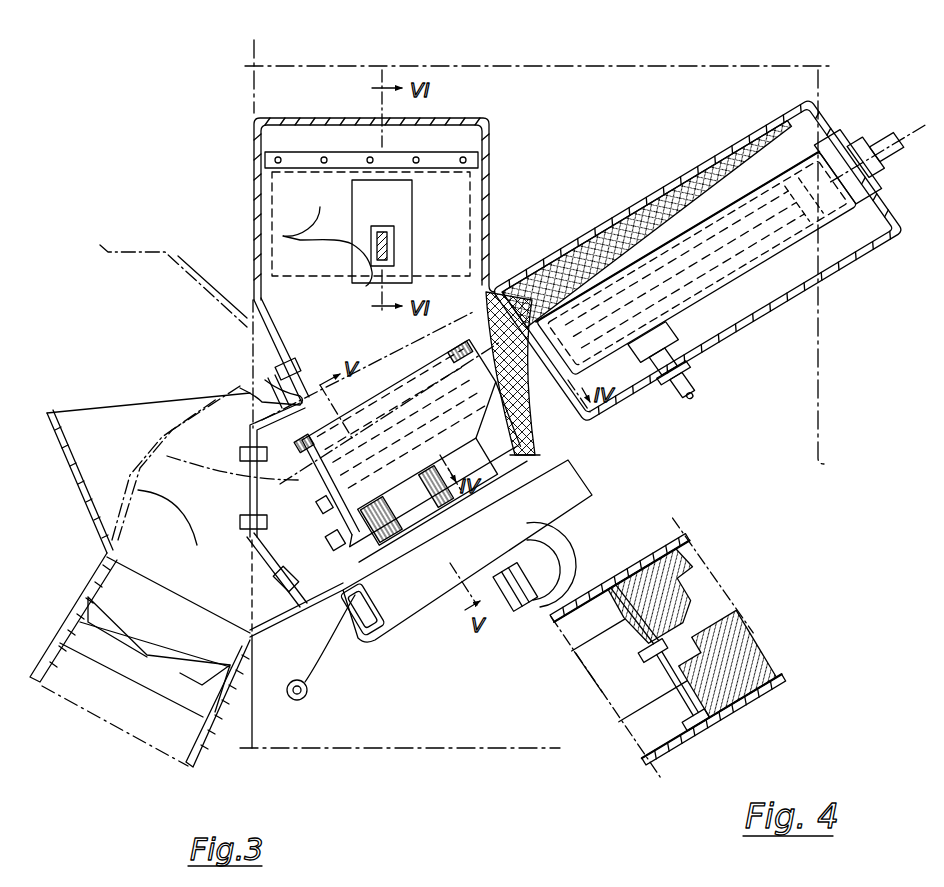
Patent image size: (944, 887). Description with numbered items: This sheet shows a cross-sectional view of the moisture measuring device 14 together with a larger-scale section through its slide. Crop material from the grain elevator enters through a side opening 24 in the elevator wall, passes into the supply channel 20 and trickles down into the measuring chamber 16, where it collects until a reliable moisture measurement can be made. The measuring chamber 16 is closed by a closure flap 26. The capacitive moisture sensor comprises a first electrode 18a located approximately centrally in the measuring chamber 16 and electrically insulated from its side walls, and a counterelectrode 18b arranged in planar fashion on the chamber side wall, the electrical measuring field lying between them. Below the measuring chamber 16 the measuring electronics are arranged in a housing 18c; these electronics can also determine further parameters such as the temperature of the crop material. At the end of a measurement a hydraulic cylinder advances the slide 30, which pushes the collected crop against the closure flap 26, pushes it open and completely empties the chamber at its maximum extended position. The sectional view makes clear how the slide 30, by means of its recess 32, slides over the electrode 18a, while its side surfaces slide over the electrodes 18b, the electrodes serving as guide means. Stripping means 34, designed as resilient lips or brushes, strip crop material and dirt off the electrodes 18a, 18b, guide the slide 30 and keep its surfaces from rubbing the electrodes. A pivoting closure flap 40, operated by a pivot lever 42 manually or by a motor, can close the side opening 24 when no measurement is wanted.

In FIG. 3, the moisture measuring device 14 is at (590, 145).
In FIG. 3, the measuring chamber 16 is at (417, 450).
In FIG. 3, the first electrode 18a is at (530, 460).
In FIG. 4, the first electrode 18a is at (588, 672).
In FIG. 3, the counterelectrode 18b is at (247, 392).
In FIG. 4, the counterelectrode 18b is at (668, 647).
In FIG. 3, the housing 18c is at (408, 593).
In FIG. 3, the supply channel 20 is at (298, 313).
In FIG. 3, the side opening 24 is at (258, 232).
In FIG. 3, the closure flap 26 is at (167, 529).
In FIG. 3, the slide 30 is at (167, 456).
In FIG. 4, the slide 30 is at (722, 663).
In FIG. 4, the recess 32 is at (666, 648).
In FIG. 4, the stripping means 34 is at (655, 655).
In FIG. 3, the pivoting closure flap 40 is at (281, 257).
In FIG. 3, the pivot lever 42 is at (385, 242).